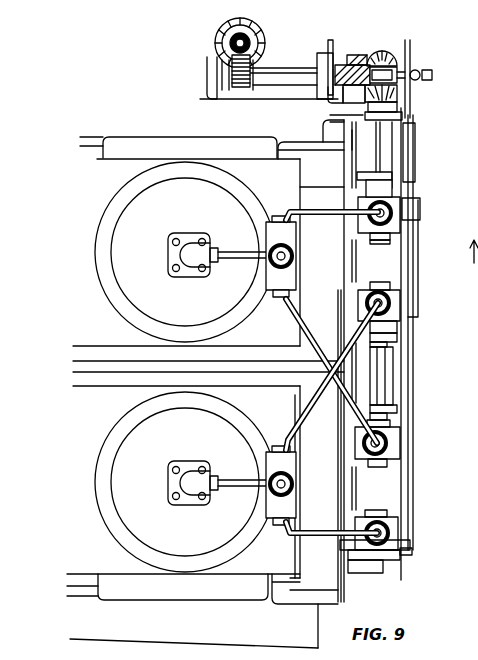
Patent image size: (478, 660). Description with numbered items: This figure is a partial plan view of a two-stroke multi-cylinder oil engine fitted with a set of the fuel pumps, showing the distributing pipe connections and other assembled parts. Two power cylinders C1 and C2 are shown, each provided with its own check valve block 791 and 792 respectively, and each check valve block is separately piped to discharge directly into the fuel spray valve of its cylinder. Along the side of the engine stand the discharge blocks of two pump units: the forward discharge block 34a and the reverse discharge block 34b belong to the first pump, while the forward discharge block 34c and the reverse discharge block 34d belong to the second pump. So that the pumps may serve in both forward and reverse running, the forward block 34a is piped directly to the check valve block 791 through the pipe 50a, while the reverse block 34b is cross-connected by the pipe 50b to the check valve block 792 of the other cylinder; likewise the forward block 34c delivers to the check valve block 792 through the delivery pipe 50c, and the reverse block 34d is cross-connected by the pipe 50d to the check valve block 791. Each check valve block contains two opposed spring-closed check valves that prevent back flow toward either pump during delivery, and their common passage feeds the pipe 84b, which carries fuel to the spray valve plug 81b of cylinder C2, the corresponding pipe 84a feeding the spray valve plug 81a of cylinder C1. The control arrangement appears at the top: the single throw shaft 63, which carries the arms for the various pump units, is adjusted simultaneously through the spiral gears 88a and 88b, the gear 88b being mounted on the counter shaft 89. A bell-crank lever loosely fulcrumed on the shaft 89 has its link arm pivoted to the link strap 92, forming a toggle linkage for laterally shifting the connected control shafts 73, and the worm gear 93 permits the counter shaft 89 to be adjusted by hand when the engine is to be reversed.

The worm gear 93 is at (252, 42).
The spiral gear 88a is at (343, 62).
The spiral gear 88b is at (366, 55).
The counter shaft 89 is at (288, 72).
The single throw shaft 63 is at (353, 138).
The link strap 92 is at (415, 166).
The delivery pipe 50c is at (327, 210).
The cross-connected pipe 50b is at (323, 360).
The cross-connected pipe 50d is at (311, 402).
The delivery pipe 50a is at (312, 530).
The forward discharge block 34c is at (405, 220).
The reverse discharge block 34d is at (397, 302).
The reverse discharge block 34b is at (393, 450).
The forward discharge block 34a is at (477, 533).
The spray valve plug 81b is at (190, 240).
The spray valve plug 81a is at (192, 468).
The pipe 84b is at (230, 252).
The pipe 84a is at (238, 476).
The check valve block 792 is at (288, 276).
The check valve block 791 is at (291, 478).
The control shaft 73 is at (410, 327).
The power cylinder C2 is at (148, 310).
The power cylinder C1 is at (138, 430).